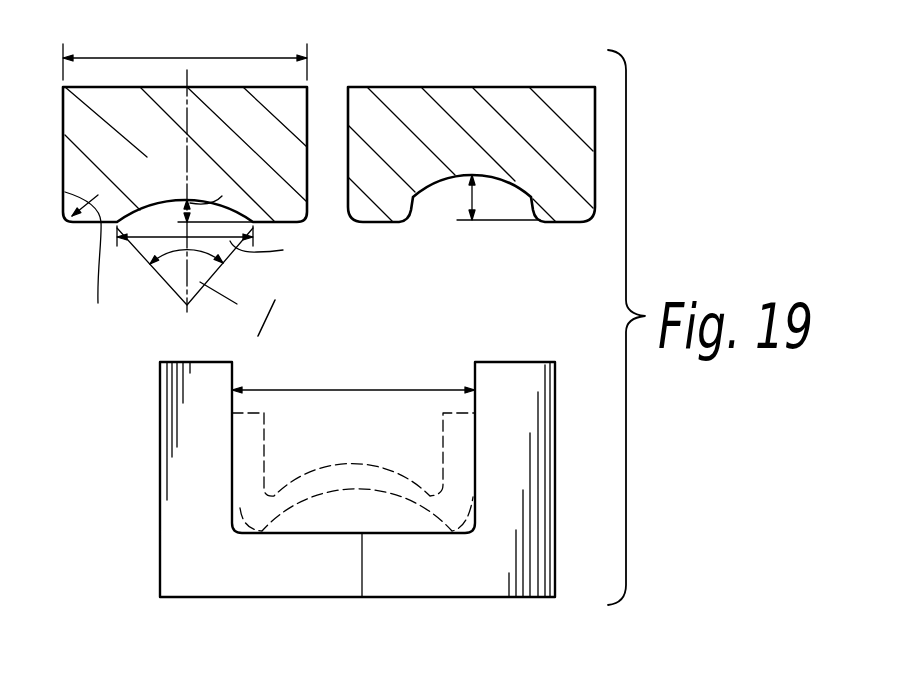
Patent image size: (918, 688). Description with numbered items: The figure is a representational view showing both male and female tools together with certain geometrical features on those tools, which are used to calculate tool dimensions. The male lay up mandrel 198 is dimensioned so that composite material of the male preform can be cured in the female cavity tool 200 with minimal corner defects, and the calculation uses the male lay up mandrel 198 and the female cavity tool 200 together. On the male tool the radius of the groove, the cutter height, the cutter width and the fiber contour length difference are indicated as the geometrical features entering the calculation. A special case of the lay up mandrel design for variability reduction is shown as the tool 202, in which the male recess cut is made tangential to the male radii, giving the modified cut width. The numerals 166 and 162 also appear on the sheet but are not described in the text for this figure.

The male lay up mandrel 198 is at (297, 121).
The tool 202 is at (527, 113).
The female cavity tool 200 is at (572, 312).
The element 166 (adjacent figure) 166 is at (797, 0).
The element 162 (adjacent figure) 162 is at (743, 10).